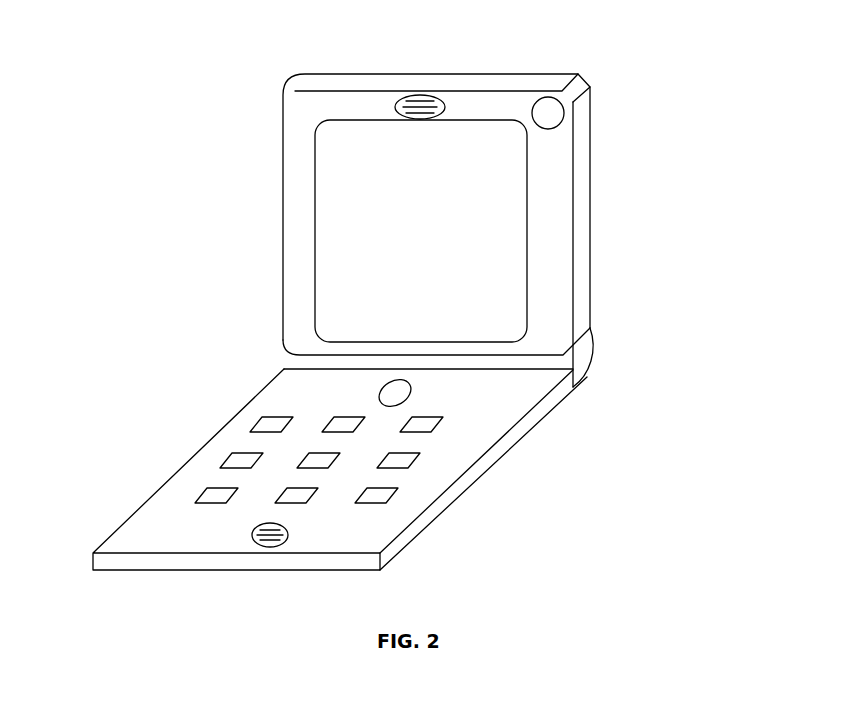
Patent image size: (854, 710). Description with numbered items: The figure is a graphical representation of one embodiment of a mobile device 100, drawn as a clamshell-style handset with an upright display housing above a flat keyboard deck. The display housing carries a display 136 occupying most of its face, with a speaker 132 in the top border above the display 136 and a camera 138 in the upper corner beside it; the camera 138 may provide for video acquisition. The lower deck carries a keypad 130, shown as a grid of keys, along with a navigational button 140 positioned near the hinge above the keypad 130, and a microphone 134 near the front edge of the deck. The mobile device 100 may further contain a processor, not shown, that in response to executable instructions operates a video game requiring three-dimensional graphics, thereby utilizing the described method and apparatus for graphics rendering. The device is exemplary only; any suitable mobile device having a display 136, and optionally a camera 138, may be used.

The mobile device 100 is at (658, 180).
The keypad 130 is at (274, 411).
The speaker 132 is at (398, 103).
The microphone 134 is at (289, 540).
The display 136 is at (317, 220).
The camera 138 is at (564, 113).
The navigational button 140 is at (410, 398).